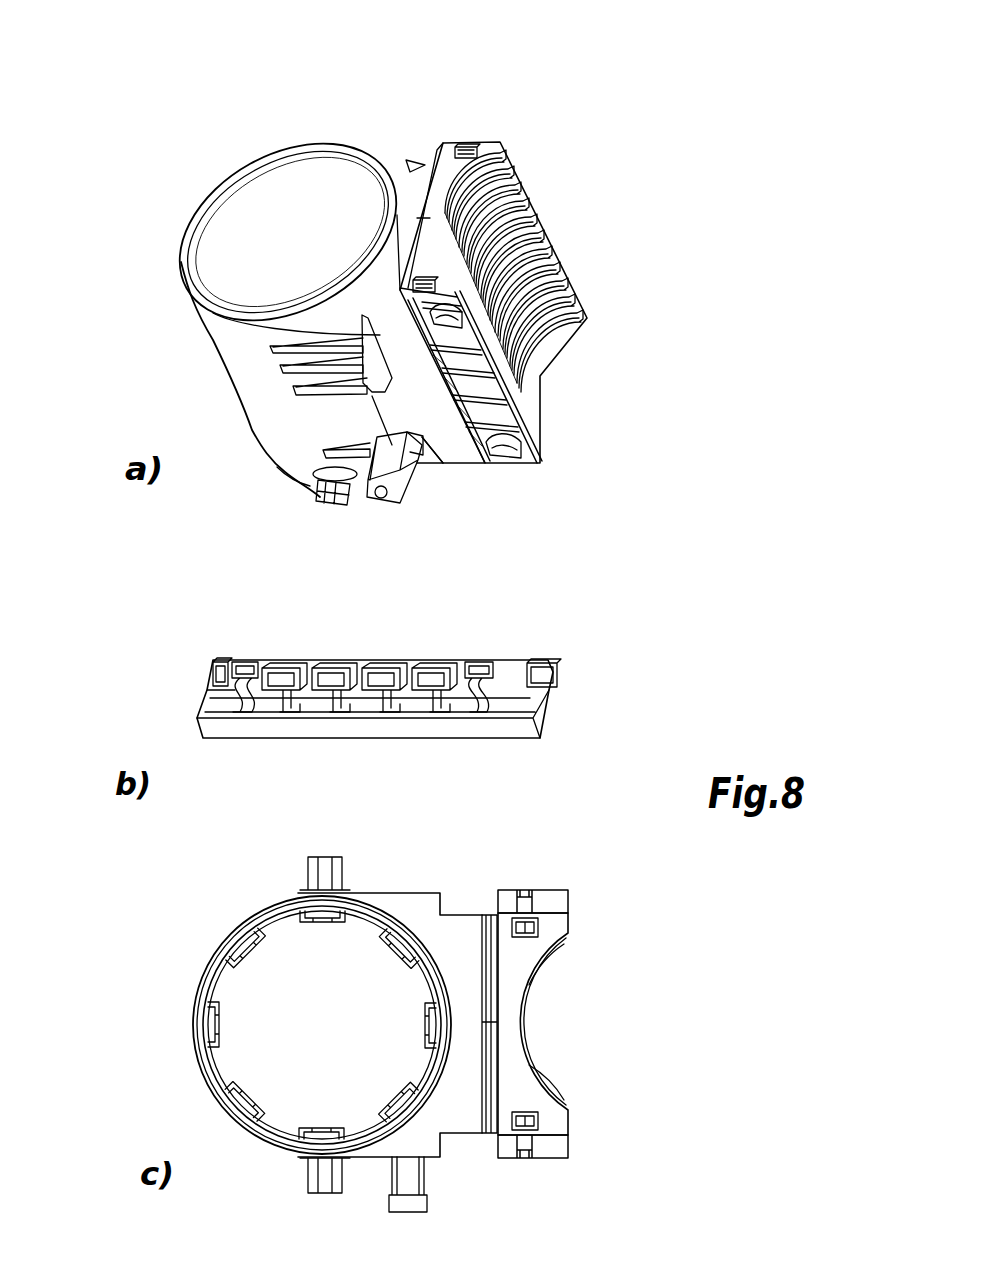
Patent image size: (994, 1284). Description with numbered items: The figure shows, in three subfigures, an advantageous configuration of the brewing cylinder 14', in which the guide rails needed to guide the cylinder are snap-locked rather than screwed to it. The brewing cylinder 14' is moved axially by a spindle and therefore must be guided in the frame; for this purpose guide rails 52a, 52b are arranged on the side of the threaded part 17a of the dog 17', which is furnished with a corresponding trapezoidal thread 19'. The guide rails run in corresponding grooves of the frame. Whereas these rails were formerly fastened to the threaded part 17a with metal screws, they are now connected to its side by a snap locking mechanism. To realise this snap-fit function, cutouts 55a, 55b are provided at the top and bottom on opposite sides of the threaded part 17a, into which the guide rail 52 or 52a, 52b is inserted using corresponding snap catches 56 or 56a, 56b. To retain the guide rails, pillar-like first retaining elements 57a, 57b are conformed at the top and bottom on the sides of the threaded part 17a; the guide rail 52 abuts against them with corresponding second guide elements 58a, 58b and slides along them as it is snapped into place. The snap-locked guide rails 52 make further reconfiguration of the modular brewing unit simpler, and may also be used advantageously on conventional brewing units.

The brewing cylinder 14' is at (244, 631).
The dog 17' is at (442, 642).
The threaded part 17a is at (432, 218).
The trapezoidal thread 19' is at (582, 269).
The cutout 55a is at (468, 153).
The cutout 55b is at (413, 287).
The first retaining element 57a is at (437, 317).
The first retaining element 57b is at (497, 452).
The guide rail 52 is at (590, 665).
The guide rail 52a is at (556, 906).
The guide rail 52b is at (558, 1145).
The snap catch 56 is at (535, 927).
The snap catch 56a is at (212, 672).
The snap catch 56b is at (525, 660).
The second guide element 58a is at (250, 662).
The second guide element 58b is at (474, 662).